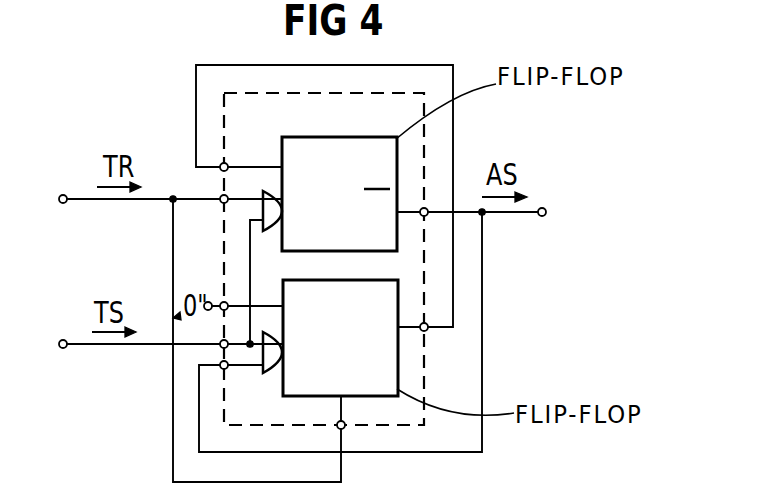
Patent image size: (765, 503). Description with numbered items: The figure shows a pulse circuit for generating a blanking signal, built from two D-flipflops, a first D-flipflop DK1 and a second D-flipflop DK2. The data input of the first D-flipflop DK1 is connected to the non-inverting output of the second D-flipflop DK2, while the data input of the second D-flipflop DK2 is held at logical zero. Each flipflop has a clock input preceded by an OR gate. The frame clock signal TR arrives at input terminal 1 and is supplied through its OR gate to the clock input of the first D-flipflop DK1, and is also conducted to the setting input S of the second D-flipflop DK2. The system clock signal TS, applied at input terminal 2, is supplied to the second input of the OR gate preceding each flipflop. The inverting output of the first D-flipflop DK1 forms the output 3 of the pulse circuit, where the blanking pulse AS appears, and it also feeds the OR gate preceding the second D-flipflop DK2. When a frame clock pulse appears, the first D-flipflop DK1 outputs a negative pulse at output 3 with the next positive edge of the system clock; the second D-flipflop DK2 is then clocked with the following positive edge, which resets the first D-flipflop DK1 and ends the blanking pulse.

The input terminal 1 is at (52, 197).
The input terminal 2 is at (52, 346).
The output 3 is at (552, 211).
The first D-flipflop DK1 is at (398, 150).
The second D-flipflop DK2 is at (399, 363).